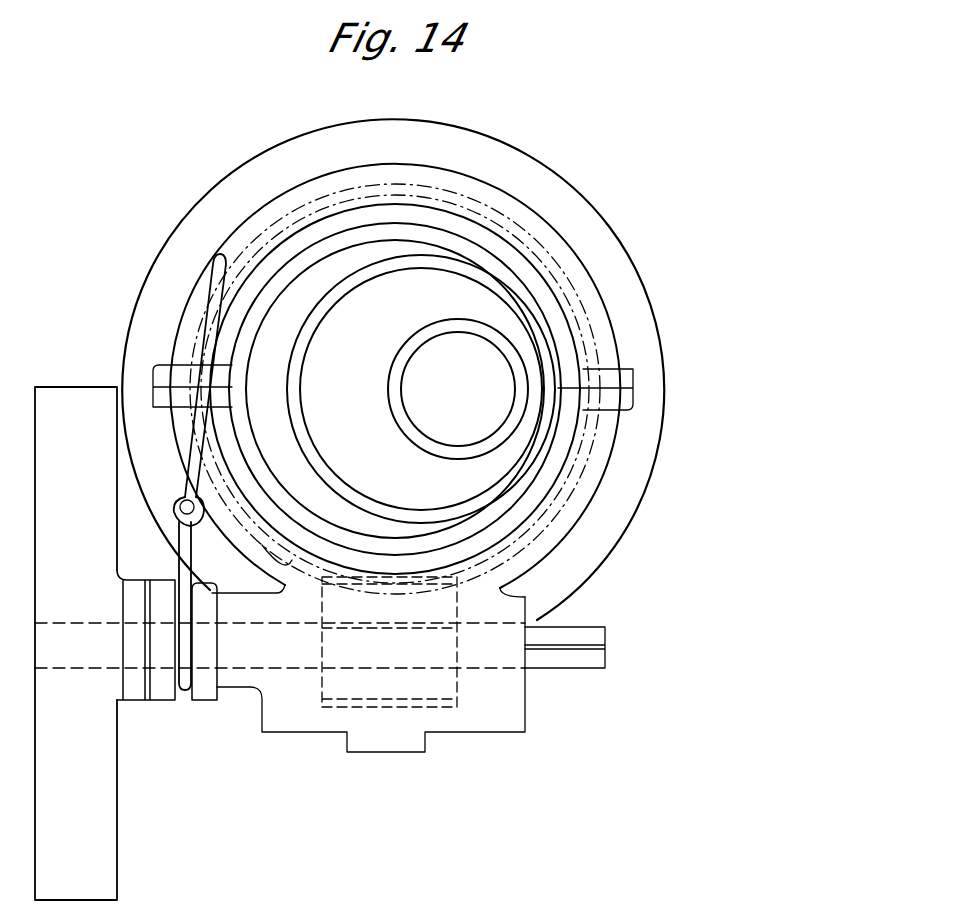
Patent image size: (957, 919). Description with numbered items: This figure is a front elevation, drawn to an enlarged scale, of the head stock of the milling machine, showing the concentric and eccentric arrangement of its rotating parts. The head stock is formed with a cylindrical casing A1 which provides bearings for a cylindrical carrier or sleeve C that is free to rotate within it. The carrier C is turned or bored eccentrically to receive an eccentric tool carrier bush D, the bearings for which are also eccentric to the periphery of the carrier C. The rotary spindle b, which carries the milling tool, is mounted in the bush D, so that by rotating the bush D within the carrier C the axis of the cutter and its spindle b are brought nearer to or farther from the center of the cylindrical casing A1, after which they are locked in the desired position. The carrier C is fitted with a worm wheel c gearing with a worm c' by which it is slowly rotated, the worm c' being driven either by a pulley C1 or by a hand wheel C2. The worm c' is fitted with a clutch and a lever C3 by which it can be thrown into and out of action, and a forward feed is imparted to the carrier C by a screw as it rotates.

The cylindrical casing A1 is at (349, 435).
The cylindrical carrier or sleeve C is at (395, 389).
The eccentric tool carrier bush D is at (421, 389).
The rotary spindle b is at (458, 389).
The pulley C1 is at (126, 643).
The hand wheel C2 is at (174, 624).
The lever C3 is at (212, 300).
The worm wheel c is at (284, 575).
The worm c' is at (389, 642).